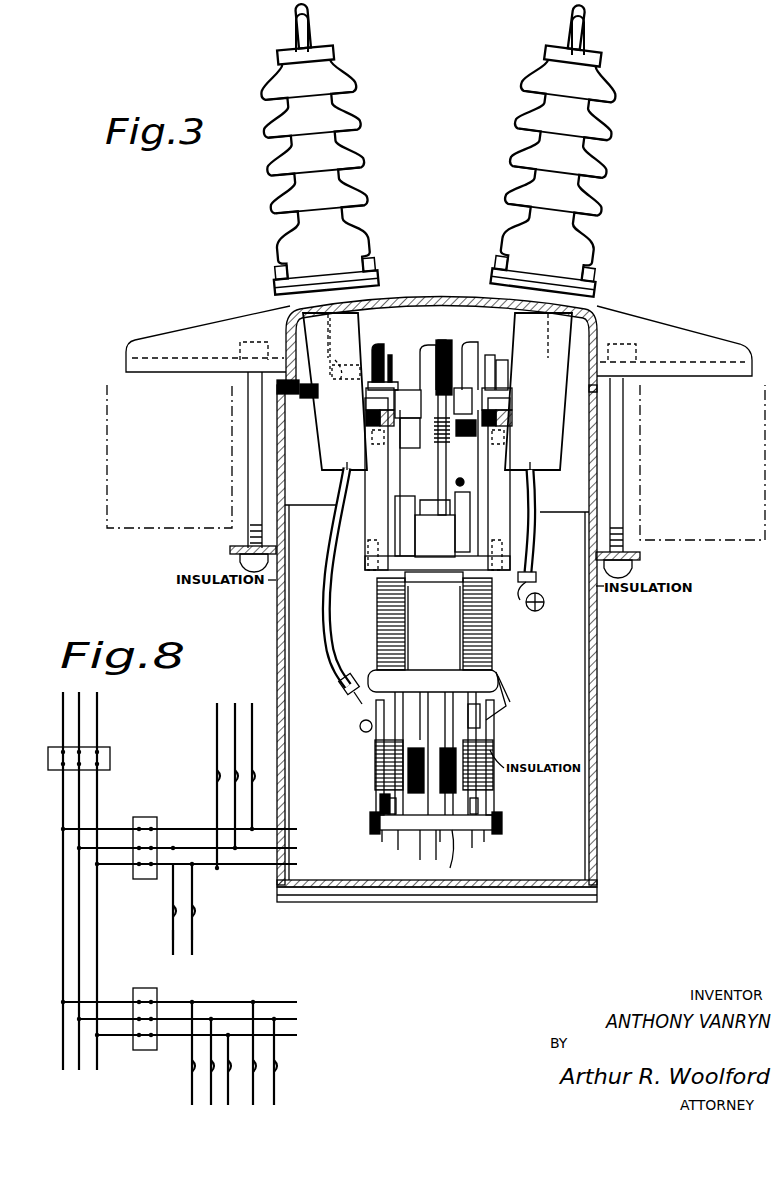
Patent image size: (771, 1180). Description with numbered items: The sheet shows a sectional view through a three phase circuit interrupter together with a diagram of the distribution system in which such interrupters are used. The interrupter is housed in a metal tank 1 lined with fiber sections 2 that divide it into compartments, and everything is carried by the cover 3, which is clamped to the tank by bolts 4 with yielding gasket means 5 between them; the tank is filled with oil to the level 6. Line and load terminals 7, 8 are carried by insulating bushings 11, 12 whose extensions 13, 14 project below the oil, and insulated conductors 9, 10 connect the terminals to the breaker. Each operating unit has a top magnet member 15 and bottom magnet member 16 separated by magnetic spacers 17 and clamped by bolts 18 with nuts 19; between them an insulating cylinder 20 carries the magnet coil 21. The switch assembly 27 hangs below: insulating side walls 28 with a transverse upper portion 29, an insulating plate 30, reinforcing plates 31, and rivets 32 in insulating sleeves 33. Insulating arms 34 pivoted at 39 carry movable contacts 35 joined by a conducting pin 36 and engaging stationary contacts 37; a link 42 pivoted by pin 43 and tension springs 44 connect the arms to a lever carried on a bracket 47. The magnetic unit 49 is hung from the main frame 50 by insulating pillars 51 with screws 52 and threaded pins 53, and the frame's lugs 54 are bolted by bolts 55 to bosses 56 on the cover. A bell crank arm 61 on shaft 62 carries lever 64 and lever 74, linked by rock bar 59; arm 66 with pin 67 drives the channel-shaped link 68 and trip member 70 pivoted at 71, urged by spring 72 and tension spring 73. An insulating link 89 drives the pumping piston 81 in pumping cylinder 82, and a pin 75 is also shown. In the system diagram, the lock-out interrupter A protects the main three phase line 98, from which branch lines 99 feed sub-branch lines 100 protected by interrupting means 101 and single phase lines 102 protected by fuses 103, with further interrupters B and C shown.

In FIG. 3, the metal tank 1 is at (598, 690).
In FIG. 3, the fiber lining sections 2 is at (590, 720).
In FIG. 3, the cover 3 is at (464, 296).
In FIG. 3, the bolts 4 is at (244, 480).
In FIG. 3, the yielding gasket means 5 is at (262, 392).
In FIG. 3, the oil level 6 is at (268, 446).
In FIG. 3, the line terminal 7 is at (306, 26).
In FIG. 3, the load terminal 8 is at (584, 34).
In FIG. 3, the insulated conductor 9 is at (324, 642).
In FIG. 3, the insulated conductor 10 is at (532, 514).
In FIG. 3, the insulating bushing 11 is at (358, 234).
In FIG. 3, the insulating bushing 12 is at (600, 212).
In FIG. 3, the bushing extension 13 is at (318, 466).
In FIG. 3, the bushing extension 14 is at (562, 440).
In FIG. 3, the top magnet member 15 is at (438, 570).
In FIG. 3, the bottom magnet member 16 is at (450, 676).
In FIG. 3, the magnetic spacers 17 is at (406, 624).
In FIG. 3, the bolts 18 is at (432, 751).
In FIG. 3, the nuts 19 is at (432, 694).
In FIG. 3, the insulating cylinder 20 is at (434, 591).
In FIG. 3, the magnet coil 21 is at (496, 632).
In FIG. 3, the switch assembly 27 is at (360, 778).
In FIG. 3, the insulating side walls 28 is at (438, 846).
In FIG. 3, the transverse upper portion 29 is at (402, 714).
In FIG. 3, the insulating plate 30 is at (506, 690).
In FIG. 3, the reinforcing insulating plates 31 is at (380, 796).
In FIG. 3, the rivets 32 is at (504, 824).
In FIG. 3, the insulating sleeves 33 is at (380, 840).
In FIG. 3, the insulating arms 34 is at (380, 806).
In FIG. 3, the movable contacts 35 is at (376, 742).
In FIG. 3, the conducting pin 36 is at (372, 758).
In FIG. 3, the stationary contacts 37 is at (360, 720).
In FIG. 3, the pivot 39 is at (372, 822).
In FIG. 3, the link 42 is at (457, 857).
In FIG. 3, the pin 43 is at (420, 850).
In FIG. 3, the tension springs 44 is at (437, 853).
In FIG. 3, the bracket 47 is at (483, 712).
In FIG. 3, the magnetic operating unit 49 is at (386, 626).
In FIG. 3, the main frame 50 is at (364, 412).
In FIG. 3, the insulating pillars 51 is at (352, 516).
In FIG. 3, the screws 52 is at (368, 584).
In FIG. 3, the threaded pins 53 is at (366, 438).
In FIG. 3, the lugs 54 is at (310, 388).
In FIG. 3, the bolts 55 is at (352, 376).
In FIG. 3, the bosses 56 is at (384, 348).
In FIG. 3, the rock bar 59 is at (428, 346).
In FIG. 3, the bell crank lever arm 61 is at (446, 342).
In FIG. 3, the transverse shaft 62 is at (418, 418).
In FIG. 3, the small lever 64 is at (486, 380).
In FIG. 3, the bell crank arm 66 is at (472, 436).
In FIG. 3, the pin 67 is at (474, 356).
In FIG. 3, the channel-shaped link 68 is at (470, 346).
In FIG. 3, the trip member 70 is at (466, 486).
In FIG. 3, the pivot 71 is at (416, 446).
In FIG. 3, the spring 72 is at (446, 428).
In FIG. 3, the tension spring 73 is at (504, 414).
In FIG. 3, the upwardly projecting lever 74 is at (362, 330).
In FIG. 3, the pin 75 is at (473, 479).
In FIG. 3, the pumping piston 81 is at (435, 528).
In FIG. 3, the pumping cylinder 82 is at (403, 526).
In FIG. 3, the insulating link 89 is at (438, 474).
In FIG. 8, the main three phase line 98 is at (62, 940).
In FIG. 8, the three phase branch lines 99 is at (232, 872).
In FIG. 8, the sub-branch lines 100 is at (262, 722).
In FIG. 8, the circuit interrupting means 101 is at (216, 780).
In FIG. 8, the single phase branch lines 102 is at (200, 938).
In FIG. 8, the fuses 103 is at (198, 914).
In FIG. 8, the repeating lock-out circuit interrupter A is at (110, 748).
In FIG. 8, the switch B is at (146, 816).
In FIG. 8, the switch C is at (156, 988).